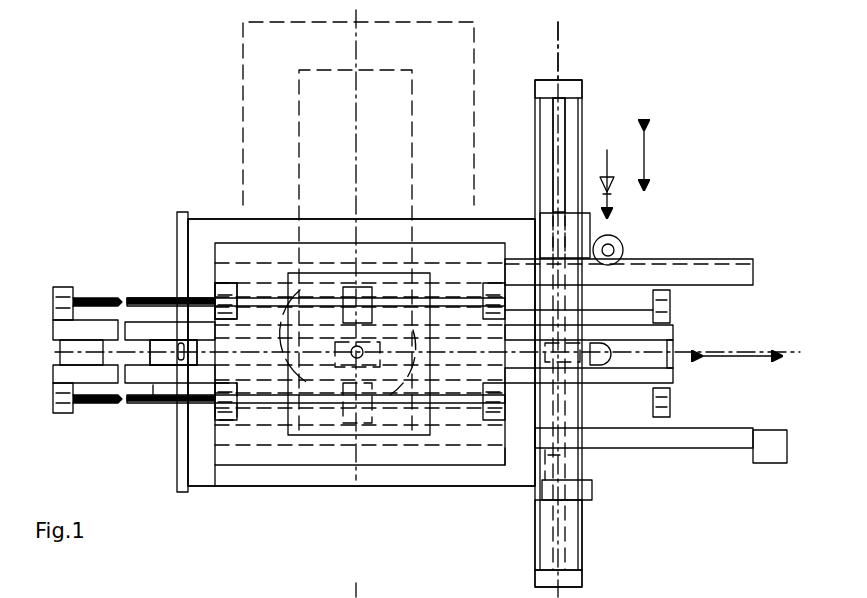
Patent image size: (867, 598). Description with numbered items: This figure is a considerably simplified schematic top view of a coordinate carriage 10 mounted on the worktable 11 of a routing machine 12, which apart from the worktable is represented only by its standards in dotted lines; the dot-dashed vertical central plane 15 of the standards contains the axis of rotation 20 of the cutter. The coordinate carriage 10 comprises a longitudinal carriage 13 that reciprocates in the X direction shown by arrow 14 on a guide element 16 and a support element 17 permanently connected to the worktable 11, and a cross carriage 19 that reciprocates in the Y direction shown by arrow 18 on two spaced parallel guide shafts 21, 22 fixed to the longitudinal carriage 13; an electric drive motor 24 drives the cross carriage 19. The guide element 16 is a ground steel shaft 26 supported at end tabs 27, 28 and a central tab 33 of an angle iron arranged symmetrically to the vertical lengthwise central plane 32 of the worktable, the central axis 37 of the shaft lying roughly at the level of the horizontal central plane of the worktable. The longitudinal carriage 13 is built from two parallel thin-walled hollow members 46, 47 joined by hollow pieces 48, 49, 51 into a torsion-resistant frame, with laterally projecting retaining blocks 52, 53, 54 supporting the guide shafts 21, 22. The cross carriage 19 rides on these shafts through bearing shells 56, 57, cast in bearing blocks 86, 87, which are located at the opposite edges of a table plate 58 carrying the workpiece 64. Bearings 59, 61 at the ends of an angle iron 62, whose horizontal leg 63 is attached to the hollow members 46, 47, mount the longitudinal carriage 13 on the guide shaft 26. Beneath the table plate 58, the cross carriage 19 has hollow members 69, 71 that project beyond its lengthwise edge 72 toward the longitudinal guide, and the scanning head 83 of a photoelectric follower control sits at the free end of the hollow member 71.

The coordinate carriage 10 is at (192, 168).
The worktable 11 is at (252, 487).
The routing machine 12 is at (242, 100).
The longitudinal carriage 13 is at (170, 395).
The arrow indicating X direction 14 is at (645, 152).
The vertical central plane 15 is at (357, 136).
The guide element 16 is at (572, 542).
The support element 17 is at (153, 412).
The arrow indicating Y direction 18 is at (745, 356).
The cross carriage 19 is at (283, 470).
The axis of rotation 20 is at (360, 348).
The guide shaft 21 is at (88, 300).
The guide shaft 22 is at (98, 405).
The electric drive motor 24 is at (622, 245).
The ground steel shaft 26 is at (562, 136).
The end tab 27 is at (570, 90).
The end tab 28 is at (570, 570).
The vertical lengthwise central plane 32 is at (110, 350).
The tab 33 is at (545, 352).
The central axis 37 is at (560, 68).
The hollow member 46 is at (148, 335).
The hollow member 47 is at (146, 395).
The hollow piece 48 is at (346, 325).
The hollow piece 49 is at (78, 354).
The hollow piece 51 is at (660, 352).
The retaining block 52 is at (62, 298).
The retaining block 53 is at (672, 406).
The retaining block 54 is at (352, 368).
The bearing shell 56 is at (220, 292).
The bearing shell 57 is at (222, 410).
The table plate 58 is at (238, 455).
The bearing 59 is at (540, 213).
The bearing 61 is at (548, 505).
The angle iron 62 is at (585, 480).
The horizontal leg 63 is at (572, 460).
The workpiece 64 is at (390, 432).
The hollow member 69 is at (710, 270).
The hollow member 71 is at (718, 440).
The lengthwise edge 72 is at (508, 460).
The scanning head 83 is at (768, 440).
The bearing block 86 is at (224, 288).
The bearing block 87 is at (222, 426).